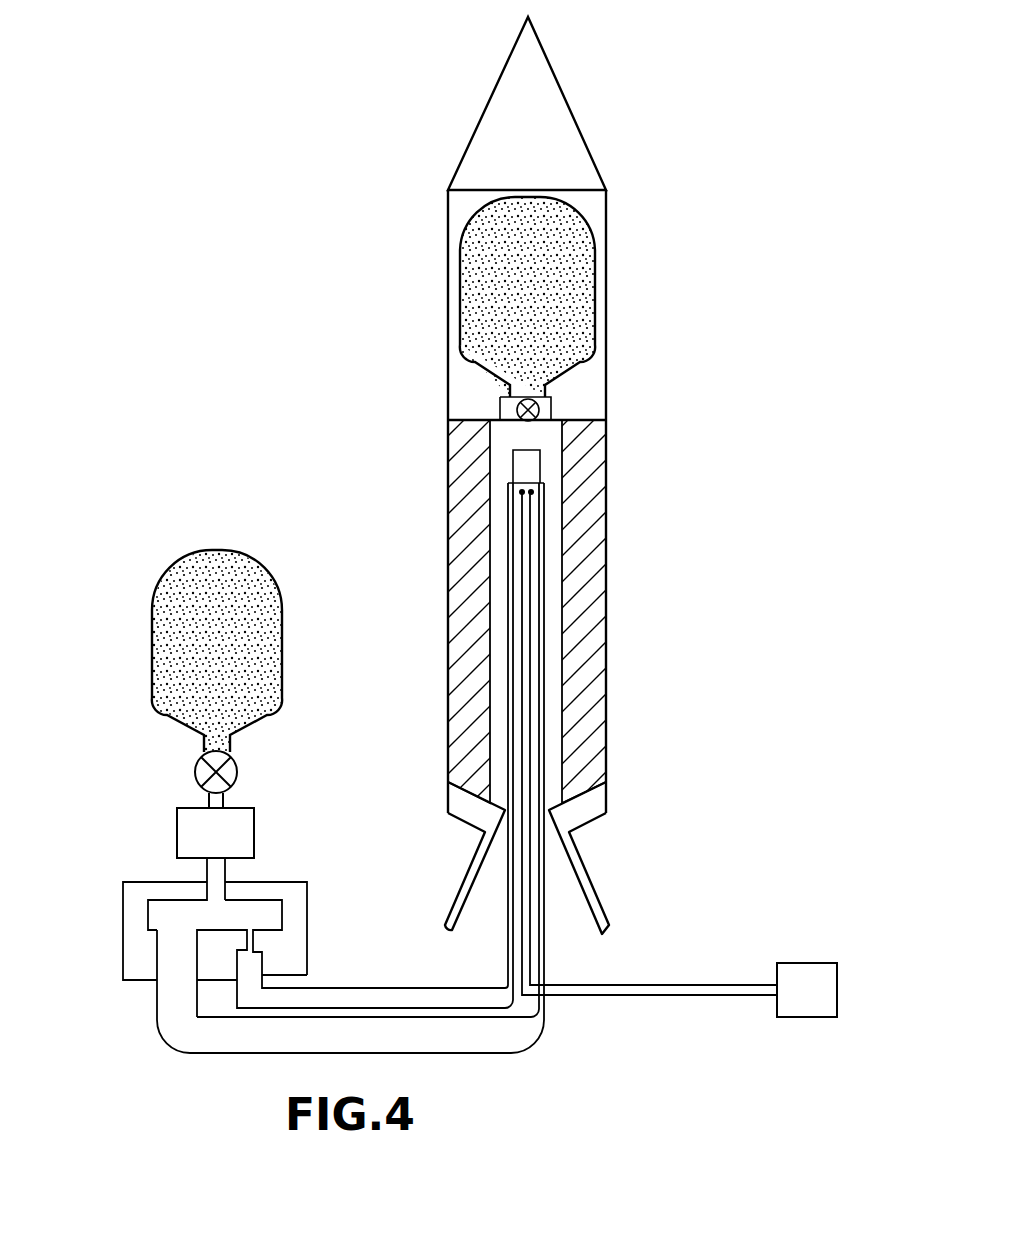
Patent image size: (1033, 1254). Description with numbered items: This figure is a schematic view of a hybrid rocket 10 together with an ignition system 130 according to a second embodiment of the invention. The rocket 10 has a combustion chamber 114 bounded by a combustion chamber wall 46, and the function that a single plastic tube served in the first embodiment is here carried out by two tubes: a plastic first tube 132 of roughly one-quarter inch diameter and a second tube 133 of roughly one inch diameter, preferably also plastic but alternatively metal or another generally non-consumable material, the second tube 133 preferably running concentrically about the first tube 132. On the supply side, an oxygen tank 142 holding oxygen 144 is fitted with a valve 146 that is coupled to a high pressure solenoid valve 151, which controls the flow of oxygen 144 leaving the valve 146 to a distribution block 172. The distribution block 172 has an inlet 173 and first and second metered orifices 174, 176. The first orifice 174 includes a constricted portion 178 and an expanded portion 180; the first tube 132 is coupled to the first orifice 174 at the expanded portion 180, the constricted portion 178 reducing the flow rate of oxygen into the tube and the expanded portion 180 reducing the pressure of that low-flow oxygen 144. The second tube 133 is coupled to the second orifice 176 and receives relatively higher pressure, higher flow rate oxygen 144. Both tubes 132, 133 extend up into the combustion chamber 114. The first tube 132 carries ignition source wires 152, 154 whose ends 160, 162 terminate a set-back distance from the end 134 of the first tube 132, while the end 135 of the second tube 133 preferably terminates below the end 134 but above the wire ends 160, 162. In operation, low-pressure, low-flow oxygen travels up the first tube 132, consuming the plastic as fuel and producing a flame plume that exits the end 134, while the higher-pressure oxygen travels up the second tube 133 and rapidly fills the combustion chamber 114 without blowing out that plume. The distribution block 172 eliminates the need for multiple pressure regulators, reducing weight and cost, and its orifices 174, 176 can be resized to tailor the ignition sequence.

The hybrid rocket 10 is at (680, 266).
The combustion chamber wall 46 is at (588, 450).
The combustion chamber 114 is at (498, 490).
The ignition system 130 is at (501, 621).
The first tube 132 is at (540, 680).
The second tube 133 is at (545, 707).
The end of the first tube 134 is at (540, 452).
The end of the second tube 135 is at (509, 482).
The oxygen tank 142 is at (218, 548).
The oxygen 144 is at (255, 568).
The valve 146 is at (239, 772).
The high pressure solenoid valve 151 is at (256, 835).
The ignition source wire 152 is at (532, 577).
The ignition source wire 154 is at (523, 583).
The end of the wire 160 is at (524, 494).
The end of the wire 162 is at (533, 496).
The distribution block 172 is at (308, 893).
The inlet 173 is at (212, 900).
The first metered orifice 174 is at (277, 953).
The second metered orifice 176 is at (165, 938).
The constricted portion 178 is at (254, 940).
The expanded portion 180 is at (307, 977).